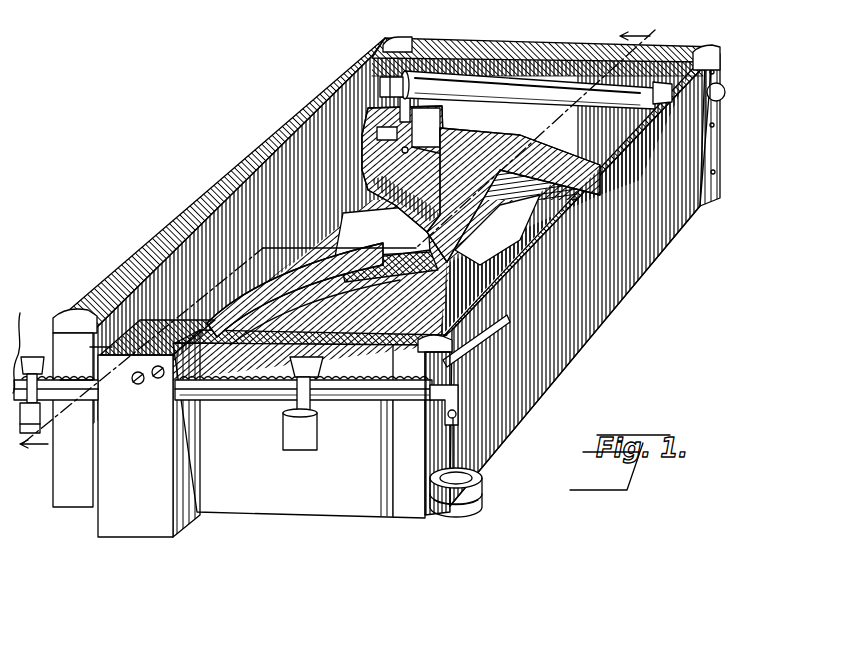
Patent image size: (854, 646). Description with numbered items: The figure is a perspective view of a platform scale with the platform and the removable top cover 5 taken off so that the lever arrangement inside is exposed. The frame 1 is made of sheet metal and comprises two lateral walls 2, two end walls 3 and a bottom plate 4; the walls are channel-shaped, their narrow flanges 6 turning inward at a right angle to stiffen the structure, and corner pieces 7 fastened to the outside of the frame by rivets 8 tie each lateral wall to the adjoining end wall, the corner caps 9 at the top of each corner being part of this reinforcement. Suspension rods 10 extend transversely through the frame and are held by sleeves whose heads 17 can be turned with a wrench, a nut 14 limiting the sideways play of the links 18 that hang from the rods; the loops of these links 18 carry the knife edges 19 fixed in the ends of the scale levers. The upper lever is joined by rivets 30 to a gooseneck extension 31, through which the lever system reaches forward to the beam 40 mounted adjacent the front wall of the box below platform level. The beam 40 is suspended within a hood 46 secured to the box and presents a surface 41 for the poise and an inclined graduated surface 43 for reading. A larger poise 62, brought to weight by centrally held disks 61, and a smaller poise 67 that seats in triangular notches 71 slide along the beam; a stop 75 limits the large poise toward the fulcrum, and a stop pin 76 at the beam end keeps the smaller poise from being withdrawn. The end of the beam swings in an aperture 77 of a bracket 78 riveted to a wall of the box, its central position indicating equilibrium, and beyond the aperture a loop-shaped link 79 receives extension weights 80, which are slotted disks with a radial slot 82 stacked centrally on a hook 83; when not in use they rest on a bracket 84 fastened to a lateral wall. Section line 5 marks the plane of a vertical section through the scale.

The frame 1 is at (660, 253).
The lateral walls 2 is at (233, 217).
The end walls 3 is at (566, 56).
The bottom plate 4 is at (337, 288).
The removable top cover 5 is at (335, 241).
The flanges 6 is at (247, 173).
The corner pieces 7 is at (721, 138).
The rivets 8 is at (716, 172).
The corner caps 9 is at (410, 40).
The rods 10 is at (503, 77).
The nut 14 is at (404, 70).
The head 17 is at (726, 92).
The links 18 is at (415, 72).
The knife edges 19 is at (430, 127).
The rivets 30 is at (410, 225).
The gooseneck extension 31 is at (383, 273).
The beam 40 is at (373, 407).
The surface for the poise 41 is at (263, 403).
The inclined surface 43 is at (270, 398).
The hood 46 is at (187, 350).
The disks 61 is at (92, 349).
The larger poise 62 is at (323, 372).
The smaller poise 67 is at (31, 357).
The triangular notches 71 is at (76, 369).
The stop 75 is at (190, 378).
The stop pin 76 is at (18, 345).
The aperture 77 is at (460, 384).
The bracket 78 is at (433, 377).
The loop shaped link 79 is at (460, 418).
The extension weights 80 is at (480, 503).
The radial slot 82 is at (443, 513).
The hook 83 is at (458, 455).
The bracket 84 is at (487, 273).